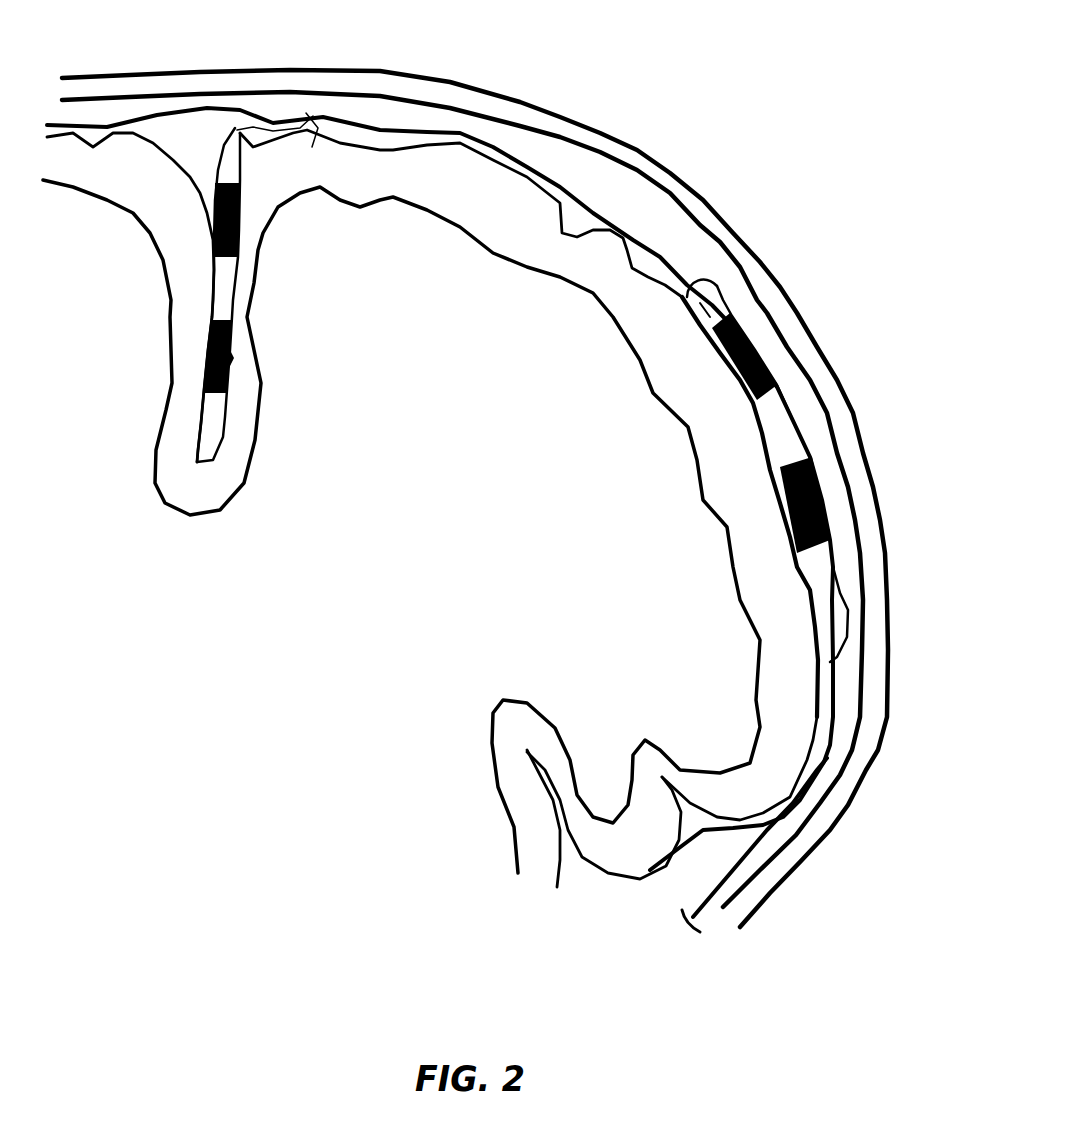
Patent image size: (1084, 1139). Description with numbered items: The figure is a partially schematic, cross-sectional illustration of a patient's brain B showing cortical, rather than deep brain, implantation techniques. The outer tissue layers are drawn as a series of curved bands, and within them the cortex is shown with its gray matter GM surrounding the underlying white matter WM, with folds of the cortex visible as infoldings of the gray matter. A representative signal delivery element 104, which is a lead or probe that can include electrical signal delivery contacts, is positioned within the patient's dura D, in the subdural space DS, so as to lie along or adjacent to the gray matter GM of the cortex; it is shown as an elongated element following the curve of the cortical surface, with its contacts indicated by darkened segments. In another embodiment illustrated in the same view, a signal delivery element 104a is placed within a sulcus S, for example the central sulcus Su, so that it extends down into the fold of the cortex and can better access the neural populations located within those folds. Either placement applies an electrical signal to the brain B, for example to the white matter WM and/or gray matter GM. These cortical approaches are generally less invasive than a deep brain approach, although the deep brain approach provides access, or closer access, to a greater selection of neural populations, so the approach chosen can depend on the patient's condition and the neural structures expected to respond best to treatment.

The sulcus S is at (117, 88).
The brain B is at (777, 297).
The dura D is at (650, 242).
The subdural space DS is at (665, 272).
The gray matter GM is at (503, 219).
The white matter WM is at (483, 501).
The central sulcus Su is at (205, 198).
The signal delivery element 104 is at (806, 411).
The signal delivery element 104a is at (211, 277).